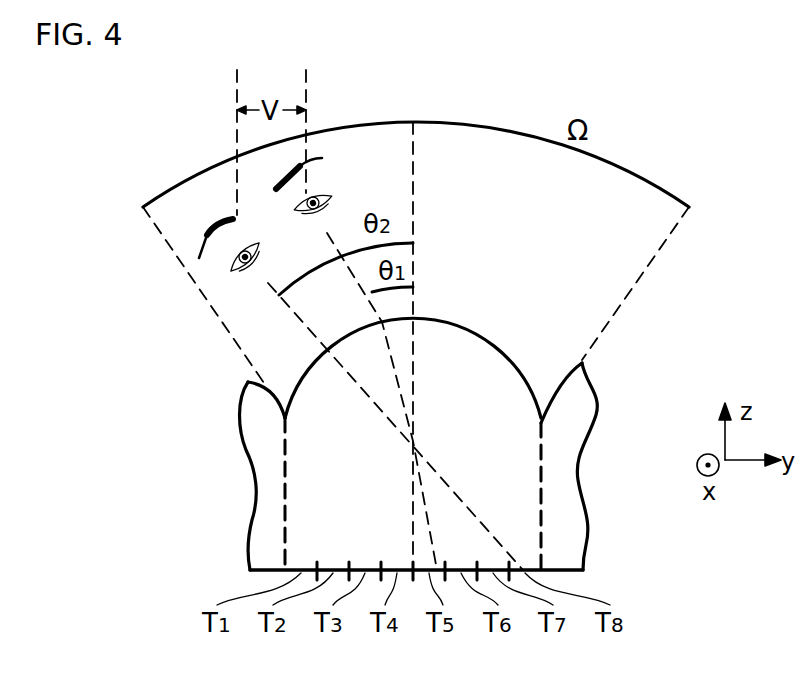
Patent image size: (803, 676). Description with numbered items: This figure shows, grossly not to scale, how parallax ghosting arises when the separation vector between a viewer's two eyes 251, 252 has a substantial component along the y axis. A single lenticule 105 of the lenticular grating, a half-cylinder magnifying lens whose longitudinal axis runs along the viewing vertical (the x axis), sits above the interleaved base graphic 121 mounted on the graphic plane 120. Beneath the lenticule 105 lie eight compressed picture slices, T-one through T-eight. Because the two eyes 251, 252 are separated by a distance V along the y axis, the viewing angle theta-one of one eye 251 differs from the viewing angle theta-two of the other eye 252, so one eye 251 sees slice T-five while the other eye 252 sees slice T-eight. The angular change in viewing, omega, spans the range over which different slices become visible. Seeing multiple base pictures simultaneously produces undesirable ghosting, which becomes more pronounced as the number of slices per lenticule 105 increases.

The lenticule 105 is at (478, 331).
The graphic plane 120 is at (584, 570).
The interleaved base graphic 121 is at (250, 570).
The eye 251 is at (359, 172).
The eye 252 is at (241, 275).